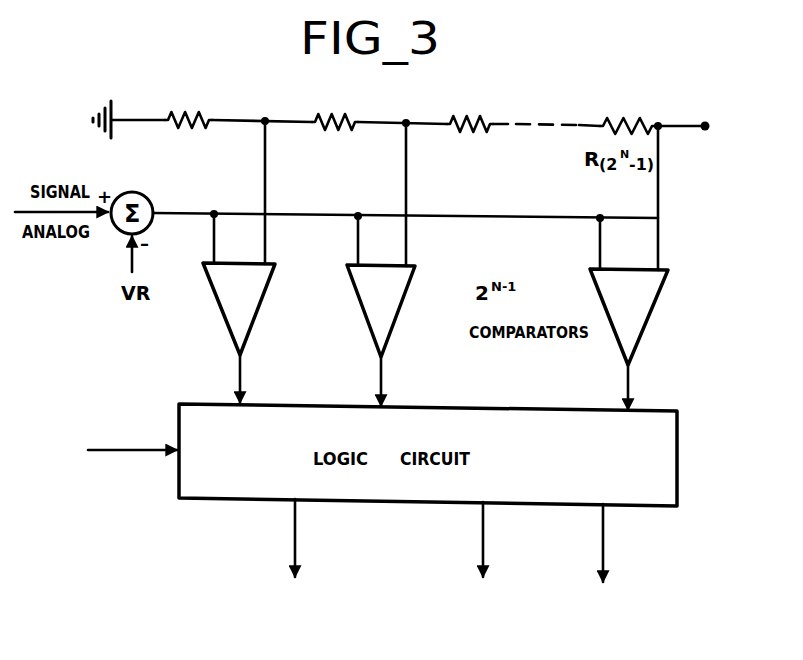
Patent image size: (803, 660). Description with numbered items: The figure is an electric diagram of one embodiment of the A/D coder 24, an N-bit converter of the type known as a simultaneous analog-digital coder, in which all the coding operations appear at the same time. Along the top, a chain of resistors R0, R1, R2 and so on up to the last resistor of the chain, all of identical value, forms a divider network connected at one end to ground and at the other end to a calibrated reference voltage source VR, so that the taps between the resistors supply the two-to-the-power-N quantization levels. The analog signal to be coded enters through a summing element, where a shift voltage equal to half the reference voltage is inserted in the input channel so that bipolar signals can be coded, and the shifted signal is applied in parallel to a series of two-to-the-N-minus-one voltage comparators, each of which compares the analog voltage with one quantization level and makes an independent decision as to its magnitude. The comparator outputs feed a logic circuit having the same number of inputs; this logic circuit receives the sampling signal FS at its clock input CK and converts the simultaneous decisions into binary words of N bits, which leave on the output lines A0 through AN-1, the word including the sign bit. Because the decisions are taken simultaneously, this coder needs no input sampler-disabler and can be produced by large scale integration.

The A/D coder 24 is at (414, 109).
The resistor R0 is at (188, 140).
The resistor R1 is at (335, 141).
The resistor R2 is at (470, 143).
The calibrated reference voltage source VR is at (721, 131).
The clock input CK is at (149, 454).
The sampling signal FS is at (64, 454).
The output bit A0 is at (290, 558).
The output bit AN-1 is at (603, 564).